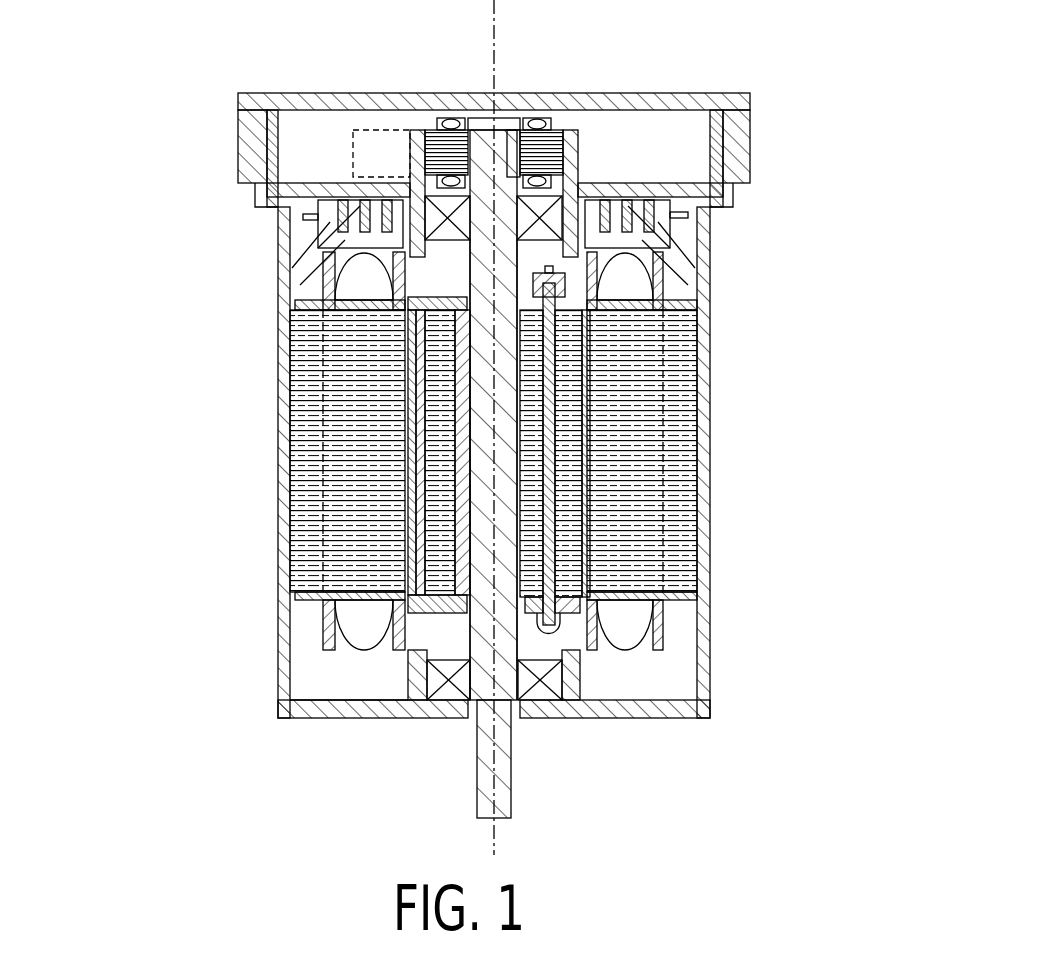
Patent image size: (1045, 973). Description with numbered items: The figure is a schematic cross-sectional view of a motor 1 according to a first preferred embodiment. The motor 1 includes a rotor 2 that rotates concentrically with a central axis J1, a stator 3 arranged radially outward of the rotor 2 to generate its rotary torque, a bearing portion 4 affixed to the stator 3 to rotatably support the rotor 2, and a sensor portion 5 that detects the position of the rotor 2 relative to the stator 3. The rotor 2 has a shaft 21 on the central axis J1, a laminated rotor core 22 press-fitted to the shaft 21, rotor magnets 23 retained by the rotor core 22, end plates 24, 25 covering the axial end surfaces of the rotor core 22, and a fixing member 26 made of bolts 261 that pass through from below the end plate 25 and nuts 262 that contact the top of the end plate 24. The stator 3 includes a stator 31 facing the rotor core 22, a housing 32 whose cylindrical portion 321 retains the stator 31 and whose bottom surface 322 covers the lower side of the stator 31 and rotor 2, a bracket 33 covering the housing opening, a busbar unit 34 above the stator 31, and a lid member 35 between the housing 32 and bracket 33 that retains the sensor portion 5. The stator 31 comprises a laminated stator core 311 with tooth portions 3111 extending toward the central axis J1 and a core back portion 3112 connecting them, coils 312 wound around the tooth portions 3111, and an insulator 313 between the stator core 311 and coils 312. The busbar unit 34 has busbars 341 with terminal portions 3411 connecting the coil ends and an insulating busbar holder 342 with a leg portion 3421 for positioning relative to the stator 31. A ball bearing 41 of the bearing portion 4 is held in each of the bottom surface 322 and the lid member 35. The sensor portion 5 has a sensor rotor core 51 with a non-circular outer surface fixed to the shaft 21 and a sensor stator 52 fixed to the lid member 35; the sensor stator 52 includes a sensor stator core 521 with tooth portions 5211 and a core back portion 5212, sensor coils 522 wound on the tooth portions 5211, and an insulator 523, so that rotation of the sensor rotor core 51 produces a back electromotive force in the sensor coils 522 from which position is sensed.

The motor 1 is at (62, 79).
The central axis J1 is at (504, 48).
The rotor 2 is at (518, 762).
The shaft 21 is at (477, 783).
The rotor core 22 is at (408, 650).
The rotor magnets 23 is at (416, 432).
The end plate 24 is at (380, 275).
The end plate 25 is at (375, 612).
The fixing member 26 is at (570, 283).
The bolts 261 is at (558, 628).
The nuts 262 is at (562, 292).
The stator 3 is at (722, 445).
The stator 31 is at (678, 617).
The stator core 311 is at (308, 558).
The tooth portions 3111 is at (375, 357).
The core back portion 3112 is at (308, 379).
The coils 312 is at (636, 640).
The insulator 313 is at (602, 264).
The housing 32 is at (278, 505).
The cylindrical portion 321 is at (284, 452).
The bottom surface 322 is at (670, 710).
The bracket 33 is at (268, 101).
The busbar unit 34 is at (310, 227).
The busbars 341 is at (698, 187).
The busbar holder 342 is at (660, 226).
The terminal portion 3411 is at (682, 242).
The leg portion 3421 is at (690, 247).
The lid member 35 is at (300, 184).
The bearing portion 4 is at (566, 680).
The ball bearing 41 is at (560, 216).
The sensor portion 5 is at (566, 125).
The sensor rotor core 51 is at (468, 126).
The sensor stator 52 is at (448, 122).
The sensor stator core 521 is at (421, 154).
The tooth portions 5211 is at (432, 128).
The core back portion 5212 is at (432, 142).
The sensor coils 522 is at (543, 124).
The insulator 523 is at (562, 126).